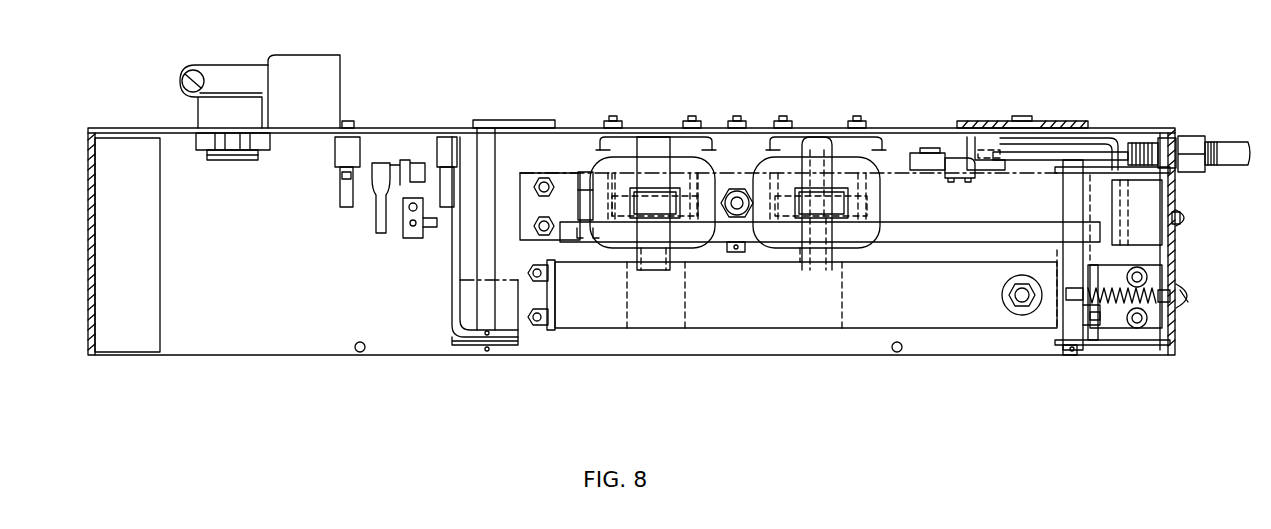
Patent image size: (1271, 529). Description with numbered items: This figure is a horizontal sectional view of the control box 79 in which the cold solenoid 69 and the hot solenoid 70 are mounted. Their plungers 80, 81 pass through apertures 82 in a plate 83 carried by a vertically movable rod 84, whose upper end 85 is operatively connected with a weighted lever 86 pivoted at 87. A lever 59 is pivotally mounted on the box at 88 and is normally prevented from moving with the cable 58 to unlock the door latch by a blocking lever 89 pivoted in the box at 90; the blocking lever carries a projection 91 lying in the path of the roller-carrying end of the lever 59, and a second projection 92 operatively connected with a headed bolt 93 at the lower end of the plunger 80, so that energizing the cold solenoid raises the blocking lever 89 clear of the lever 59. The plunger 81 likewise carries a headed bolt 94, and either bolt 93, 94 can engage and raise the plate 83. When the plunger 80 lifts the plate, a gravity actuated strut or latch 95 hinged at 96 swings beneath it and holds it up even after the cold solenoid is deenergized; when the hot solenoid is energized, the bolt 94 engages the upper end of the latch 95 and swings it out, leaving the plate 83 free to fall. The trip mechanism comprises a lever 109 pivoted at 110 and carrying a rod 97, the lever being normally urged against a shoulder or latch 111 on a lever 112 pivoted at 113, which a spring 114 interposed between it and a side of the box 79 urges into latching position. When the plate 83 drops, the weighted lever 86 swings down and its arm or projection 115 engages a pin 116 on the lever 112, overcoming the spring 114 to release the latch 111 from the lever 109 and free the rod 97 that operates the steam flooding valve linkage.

The cable 58 is at (1090, 155).
The lever 59 is at (937, 172).
The cold solenoid 69 is at (878, 143).
The hot solenoid 70 is at (712, 150).
The box 79 is at (412, 355).
The plunger 80 is at (833, 220).
The plunger 81 is at (640, 217).
The apertures 82 is at (735, 242).
The plate 83 is at (860, 212).
The vertically movable rod 84 is at (745, 195).
The upper end 85 is at (740, 250).
The weighted lever 86 is at (937, 238).
The pivot 87 is at (1076, 345).
The pivot 88 is at (1022, 117).
The blocking lever 89 is at (945, 135).
The pivot 90 is at (478, 352).
The projection 91 is at (1057, 150).
The projection 92 is at (828, 150).
The headed bolt 93 is at (880, 165).
The headed bolt 94 is at (695, 212).
The gravity actuated strut or latch 95 is at (590, 170).
The hinge or pivot 96 is at (580, 173).
The rod 97 is at (1020, 313).
The lever 109 is at (683, 328).
The pivot 110 is at (557, 330).
The shoulder or latch 111 is at (1085, 330).
The lever 112 is at (1097, 318).
The pivot 113 is at (1100, 318).
The spring 114 is at (1147, 290).
The arm or projection 115 is at (1058, 252).
The pin 116 is at (1085, 296).